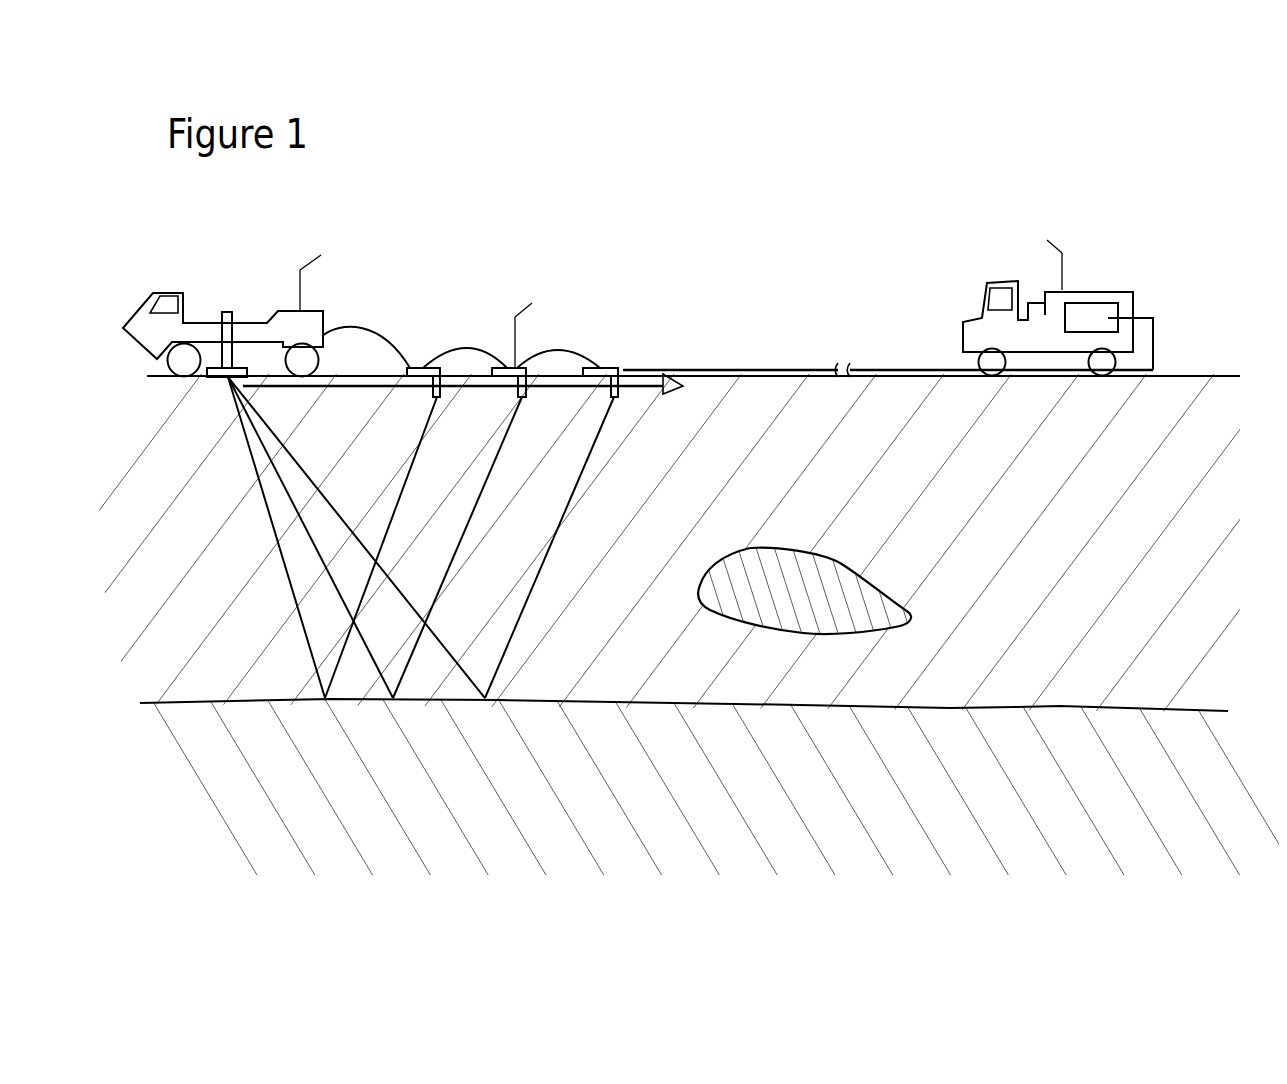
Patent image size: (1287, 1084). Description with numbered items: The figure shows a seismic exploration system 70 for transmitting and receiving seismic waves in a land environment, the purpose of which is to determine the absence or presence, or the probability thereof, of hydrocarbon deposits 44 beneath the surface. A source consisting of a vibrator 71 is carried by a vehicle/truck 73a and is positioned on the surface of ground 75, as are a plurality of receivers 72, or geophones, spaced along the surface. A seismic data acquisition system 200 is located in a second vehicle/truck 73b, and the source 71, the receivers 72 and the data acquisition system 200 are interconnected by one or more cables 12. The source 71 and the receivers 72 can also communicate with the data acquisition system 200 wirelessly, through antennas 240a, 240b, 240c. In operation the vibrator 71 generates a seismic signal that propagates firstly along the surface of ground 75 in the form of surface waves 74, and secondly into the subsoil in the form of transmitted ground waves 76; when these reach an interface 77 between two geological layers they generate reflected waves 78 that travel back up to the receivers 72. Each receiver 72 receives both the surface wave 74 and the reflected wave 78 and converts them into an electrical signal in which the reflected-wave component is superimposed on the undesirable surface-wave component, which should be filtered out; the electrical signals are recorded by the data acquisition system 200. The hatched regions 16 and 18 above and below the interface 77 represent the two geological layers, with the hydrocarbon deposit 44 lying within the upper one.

The seismic exploration system 70 is at (885, 255).
The vehicle/truck 73a is at (143, 311).
The vibrator 71 is at (233, 318).
The antenna 240b is at (340, 265).
The cable 12 is at (390, 330).
The antenna 240c is at (555, 309).
The receiver 72 is at (607, 367).
The surface wave 74 is at (363, 390).
The ground 75 is at (953, 378).
The transmitted ground wave 76 is at (248, 465).
The reflected wave 78 is at (572, 495).
The hydrocarbon deposit 44 is at (835, 560).
The upper earth formation layer 16 is at (1092, 560).
The interface 77 is at (938, 708).
The lower earth formation layer 18 is at (867, 812).
The vehicle/truck 73b is at (1112, 290).
The seismic data acquisition system 200 is at (1125, 308).
The antenna 240a is at (1047, 222).